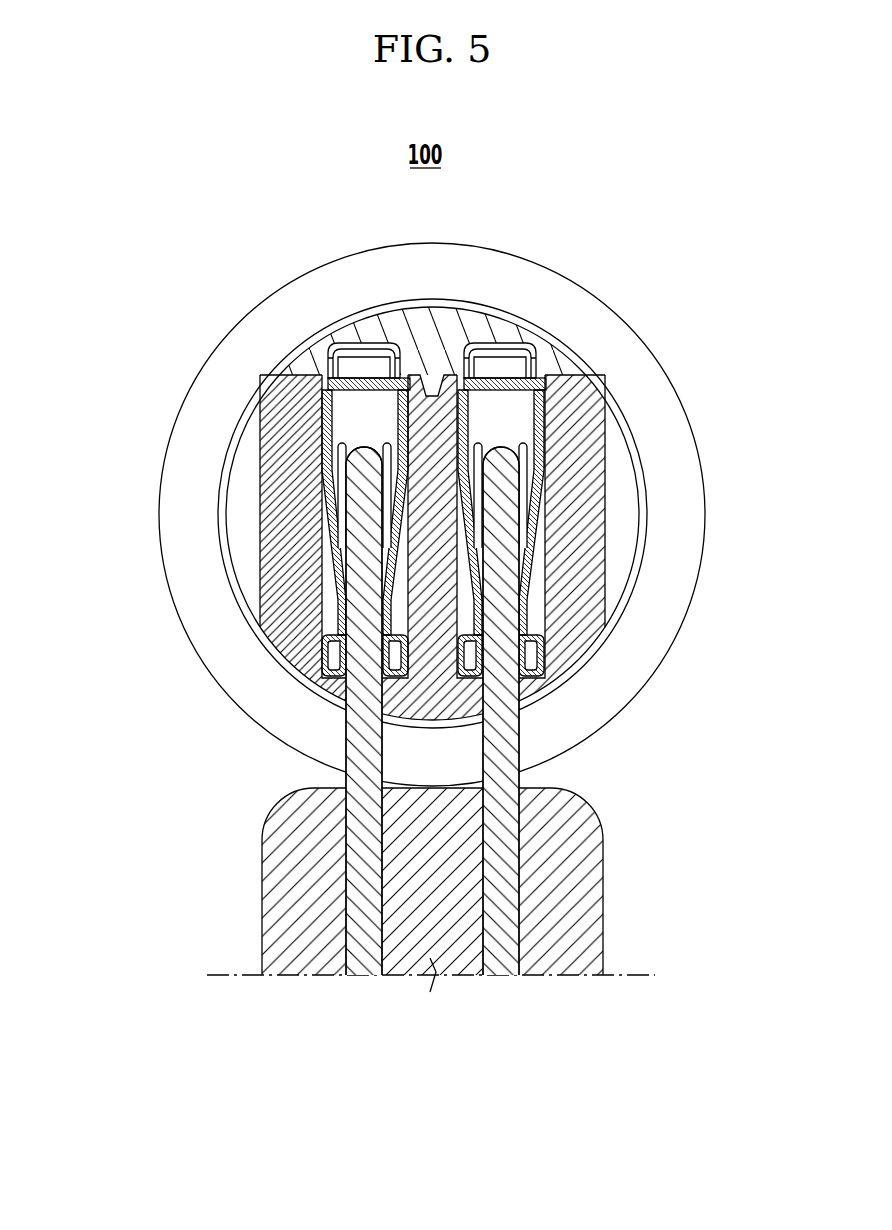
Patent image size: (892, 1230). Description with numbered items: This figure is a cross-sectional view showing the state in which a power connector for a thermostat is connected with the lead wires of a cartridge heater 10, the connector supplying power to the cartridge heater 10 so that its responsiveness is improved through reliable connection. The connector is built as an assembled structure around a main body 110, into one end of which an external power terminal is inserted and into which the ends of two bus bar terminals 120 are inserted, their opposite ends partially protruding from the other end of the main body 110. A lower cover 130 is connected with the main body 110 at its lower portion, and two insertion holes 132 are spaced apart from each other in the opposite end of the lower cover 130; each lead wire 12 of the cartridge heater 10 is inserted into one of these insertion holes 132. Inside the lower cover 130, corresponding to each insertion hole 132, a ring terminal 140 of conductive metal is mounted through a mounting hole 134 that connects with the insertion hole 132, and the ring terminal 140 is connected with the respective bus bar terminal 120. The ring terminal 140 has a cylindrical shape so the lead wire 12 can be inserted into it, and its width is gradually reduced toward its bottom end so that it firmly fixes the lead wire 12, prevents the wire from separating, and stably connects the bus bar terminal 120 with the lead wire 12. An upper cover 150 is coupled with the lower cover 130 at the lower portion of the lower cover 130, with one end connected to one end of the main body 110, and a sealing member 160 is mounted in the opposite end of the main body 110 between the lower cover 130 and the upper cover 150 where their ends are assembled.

The cartridge heater 10 is at (613, 889).
The lead wire 12 is at (504, 747).
The main body 110 is at (608, 337).
The bus bar terminal 120 is at (507, 368).
The lower cover 130 is at (580, 556).
The insertion hole 132 is at (389, 712).
The mounting hole 134 is at (326, 534).
The ring terminal 140 is at (540, 490).
The upper cover 150 is at (436, 328).
The sealing member 160 is at (278, 365).